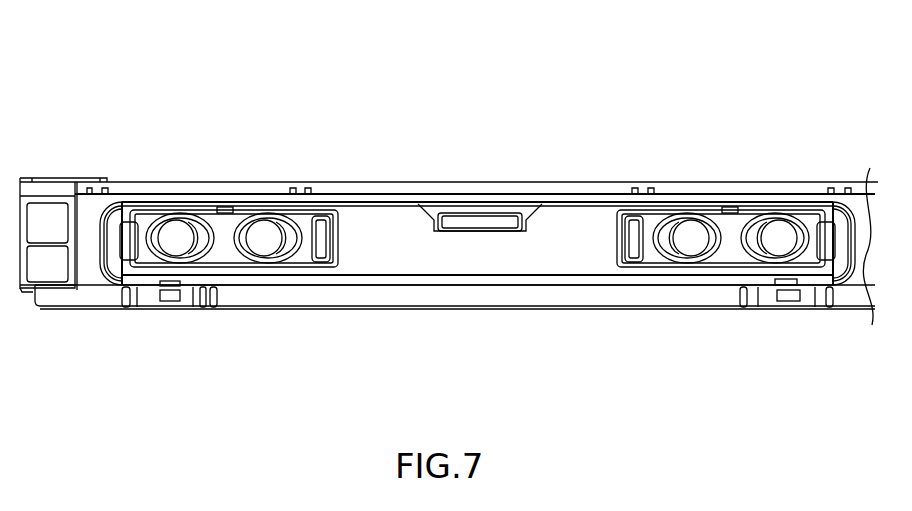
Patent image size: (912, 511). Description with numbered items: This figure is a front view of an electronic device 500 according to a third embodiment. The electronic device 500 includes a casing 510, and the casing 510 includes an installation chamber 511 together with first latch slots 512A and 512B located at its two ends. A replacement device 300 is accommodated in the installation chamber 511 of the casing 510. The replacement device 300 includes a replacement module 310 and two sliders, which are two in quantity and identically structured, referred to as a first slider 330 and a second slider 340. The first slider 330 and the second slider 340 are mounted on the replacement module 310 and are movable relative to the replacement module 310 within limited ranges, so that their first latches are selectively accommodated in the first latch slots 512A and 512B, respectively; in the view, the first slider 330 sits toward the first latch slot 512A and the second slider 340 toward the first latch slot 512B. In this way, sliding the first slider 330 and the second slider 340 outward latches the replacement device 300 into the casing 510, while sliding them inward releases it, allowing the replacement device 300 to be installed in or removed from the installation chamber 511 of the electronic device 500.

The electronic device 500 is at (44, 96).
The casing 510 is at (353, 181).
The installation chamber 511 is at (243, 285).
The first latch slot 512A is at (130, 214).
The first latch slot 512B is at (836, 216).
The replacement device 300 is at (486, 245).
The replacement module 310 is at (578, 201).
The first slider 330 is at (304, 266).
The second slider 340 is at (652, 267).